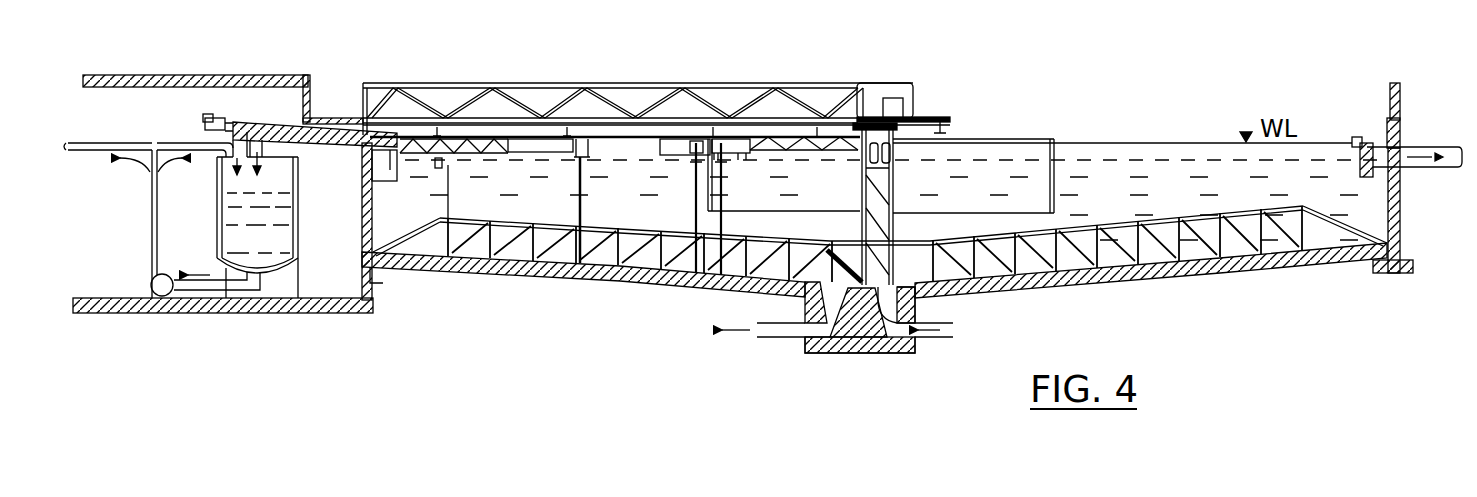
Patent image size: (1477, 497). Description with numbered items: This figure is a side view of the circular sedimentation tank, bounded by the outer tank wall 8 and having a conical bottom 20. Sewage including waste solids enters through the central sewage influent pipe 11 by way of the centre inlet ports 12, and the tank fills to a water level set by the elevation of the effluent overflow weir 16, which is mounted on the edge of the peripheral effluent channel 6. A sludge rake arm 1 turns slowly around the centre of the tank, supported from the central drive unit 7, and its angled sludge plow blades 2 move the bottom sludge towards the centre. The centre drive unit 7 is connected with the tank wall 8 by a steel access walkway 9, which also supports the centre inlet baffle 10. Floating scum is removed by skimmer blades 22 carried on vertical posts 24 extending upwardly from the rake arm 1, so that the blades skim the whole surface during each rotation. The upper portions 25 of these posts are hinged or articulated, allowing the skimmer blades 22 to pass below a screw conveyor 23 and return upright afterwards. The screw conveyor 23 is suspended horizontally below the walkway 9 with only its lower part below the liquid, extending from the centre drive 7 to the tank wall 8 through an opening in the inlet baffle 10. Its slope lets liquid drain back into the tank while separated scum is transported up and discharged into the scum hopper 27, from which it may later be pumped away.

The sludge rake arm 1 is at (497, 217).
The sludge plow blade 2 is at (460, 263).
The effluent channel 6 is at (384, 184).
The central drive unit 7 is at (878, 100).
The outer tank wall 8 is at (1407, 227).
The access walkway 9 is at (683, 113).
The centre inlet baffle 10 is at (1058, 186).
The sewage influent pipe 11 is at (890, 207).
The centre inlet ports 12 is at (888, 157).
The effluent overflow weir 16 is at (1367, 143).
The conical bottom 20 is at (1220, 281).
The skimmer blade 22 is at (644, 156).
The screw conveyor 23 is at (800, 150).
The vertical post 24 is at (578, 203).
The upper portion of vertical skimmer support 25 is at (583, 158).
The scum hopper 27 is at (300, 192).